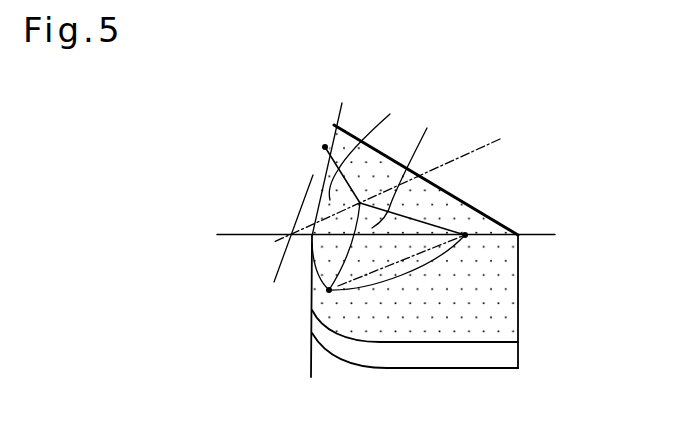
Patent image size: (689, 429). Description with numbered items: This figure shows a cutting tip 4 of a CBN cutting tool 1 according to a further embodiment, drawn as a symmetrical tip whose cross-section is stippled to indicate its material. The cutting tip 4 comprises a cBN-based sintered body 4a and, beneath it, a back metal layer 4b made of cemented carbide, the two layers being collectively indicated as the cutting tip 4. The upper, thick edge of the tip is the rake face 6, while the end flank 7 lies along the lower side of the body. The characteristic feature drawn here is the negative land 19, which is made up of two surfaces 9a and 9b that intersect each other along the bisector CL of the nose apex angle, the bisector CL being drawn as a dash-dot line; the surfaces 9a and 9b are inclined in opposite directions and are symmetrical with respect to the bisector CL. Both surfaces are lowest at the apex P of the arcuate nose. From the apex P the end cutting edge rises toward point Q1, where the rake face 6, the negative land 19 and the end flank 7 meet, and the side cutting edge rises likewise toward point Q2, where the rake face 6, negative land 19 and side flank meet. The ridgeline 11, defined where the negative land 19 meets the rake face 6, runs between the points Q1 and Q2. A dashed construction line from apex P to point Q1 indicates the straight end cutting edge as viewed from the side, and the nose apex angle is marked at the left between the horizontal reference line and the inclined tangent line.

The CBN cutting tool 1 is at (482, 118).
The cutting tip 4 is at (475, 346).
The cBN-based sintered body 4a is at (504, 327).
The back metal layer 4b is at (505, 358).
The rake face 6 is at (487, 226).
The end flank 7 is at (477, 315).
The negative land surface 9a is at (415, 163).
The negative land surface 9b is at (371, 141).
The ridgeline 11 is at (432, 225).
The negative land 19 is at (394, 139).
The bisector CL is at (402, 183).
The apex P is at (329, 291).
The point Q1 is at (465, 235).
The point Q2 is at (323, 147).